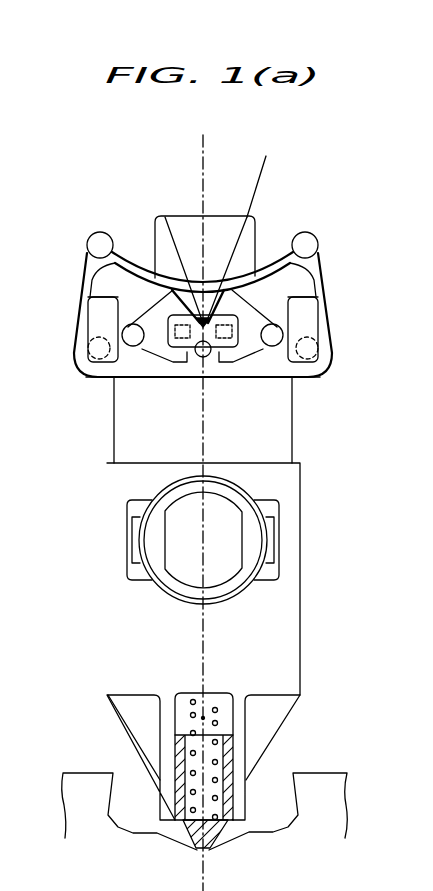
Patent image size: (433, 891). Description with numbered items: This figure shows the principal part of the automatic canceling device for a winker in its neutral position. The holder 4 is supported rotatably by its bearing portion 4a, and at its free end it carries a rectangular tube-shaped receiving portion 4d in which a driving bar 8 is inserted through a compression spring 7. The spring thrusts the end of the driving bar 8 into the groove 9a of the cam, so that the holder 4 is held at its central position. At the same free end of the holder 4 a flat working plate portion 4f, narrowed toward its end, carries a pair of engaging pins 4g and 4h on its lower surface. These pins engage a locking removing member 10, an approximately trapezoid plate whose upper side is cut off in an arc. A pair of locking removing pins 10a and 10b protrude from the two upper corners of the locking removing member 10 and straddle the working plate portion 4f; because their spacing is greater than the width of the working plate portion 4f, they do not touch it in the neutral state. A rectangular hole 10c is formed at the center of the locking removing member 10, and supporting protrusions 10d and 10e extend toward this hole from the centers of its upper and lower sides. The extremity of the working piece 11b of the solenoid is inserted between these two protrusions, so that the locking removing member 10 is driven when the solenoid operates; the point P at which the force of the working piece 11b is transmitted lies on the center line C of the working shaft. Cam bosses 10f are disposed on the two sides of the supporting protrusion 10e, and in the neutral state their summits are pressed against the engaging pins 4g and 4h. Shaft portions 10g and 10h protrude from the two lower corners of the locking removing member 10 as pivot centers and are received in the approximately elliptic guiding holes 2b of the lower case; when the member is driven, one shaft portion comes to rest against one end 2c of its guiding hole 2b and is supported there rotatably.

The center line C is at (206, 182).
The point P is at (258, 174).
The locking removing member 10 is at (340, 299).
The locking removing pin 10a is at (92, 236).
The locking removing pin 10b is at (302, 232).
The supporting protrusion 10d is at (160, 215).
The guiding hole 2b is at (92, 283).
The end of guiding hole 2c is at (85, 349).
The shaft portion 10g is at (92, 332).
The shaft portion 10h is at (316, 349).
The cam boss 10f is at (128, 346).
The working plate portion 4f is at (222, 226).
The working piece 11b is at (232, 352).
The supporting protrusion 10e is at (203, 358).
The rectangular hole 10c is at (172, 364).
The engaging pin 4g is at (103, 383).
The engaging pin 4h is at (288, 380).
The holder 4 is at (308, 592).
The bearing portion 4a is at (258, 530).
The receiving portion 4d is at (248, 785).
The driving bar 8 is at (220, 838).
The groove 9a is at (183, 845).
The compression spring 7 is at (216, 722).